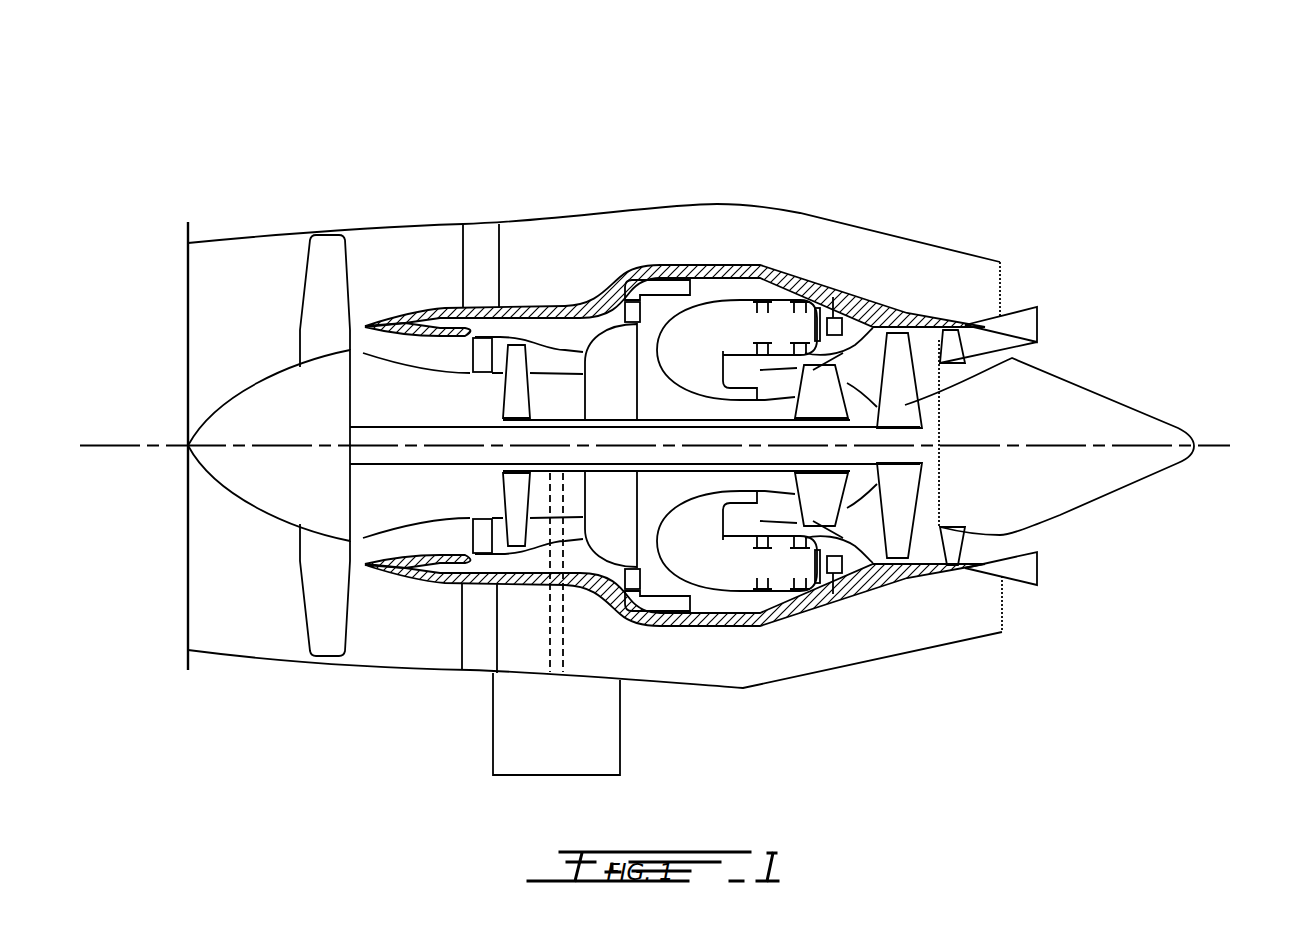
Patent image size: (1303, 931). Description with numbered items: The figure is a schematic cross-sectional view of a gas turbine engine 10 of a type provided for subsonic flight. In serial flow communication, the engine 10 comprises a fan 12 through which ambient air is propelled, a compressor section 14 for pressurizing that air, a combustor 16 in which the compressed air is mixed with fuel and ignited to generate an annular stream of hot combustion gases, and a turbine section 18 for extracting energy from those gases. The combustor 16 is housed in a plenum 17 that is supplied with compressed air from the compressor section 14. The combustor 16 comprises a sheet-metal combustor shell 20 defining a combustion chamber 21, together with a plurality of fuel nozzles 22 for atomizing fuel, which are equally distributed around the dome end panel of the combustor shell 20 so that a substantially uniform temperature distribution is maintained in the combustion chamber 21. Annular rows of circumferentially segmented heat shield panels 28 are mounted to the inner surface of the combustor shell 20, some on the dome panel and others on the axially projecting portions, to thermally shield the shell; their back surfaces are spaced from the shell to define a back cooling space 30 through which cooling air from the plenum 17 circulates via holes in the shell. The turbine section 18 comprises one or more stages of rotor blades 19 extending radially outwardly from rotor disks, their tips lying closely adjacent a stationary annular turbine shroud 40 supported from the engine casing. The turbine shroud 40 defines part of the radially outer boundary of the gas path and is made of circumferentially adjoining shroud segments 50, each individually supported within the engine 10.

The gas turbine engine 10 is at (878, 163).
The fan 12 is at (318, 583).
The compressor section 14 is at (548, 355).
The combustor 16 is at (727, 327).
The plenum 17 is at (783, 273).
The turbine section 18 is at (858, 500).
The rotor blades 19 is at (905, 393).
The combustor shell 20 is at (758, 593).
The combustion chamber 21 is at (719, 568).
The fuel nozzles 22 is at (838, 302).
The heat shield panels 28 is at (828, 310).
The back cooling space 30 is at (657, 350).
The turbine shroud 40 is at (834, 537).
The shroud segments 50 is at (803, 580).